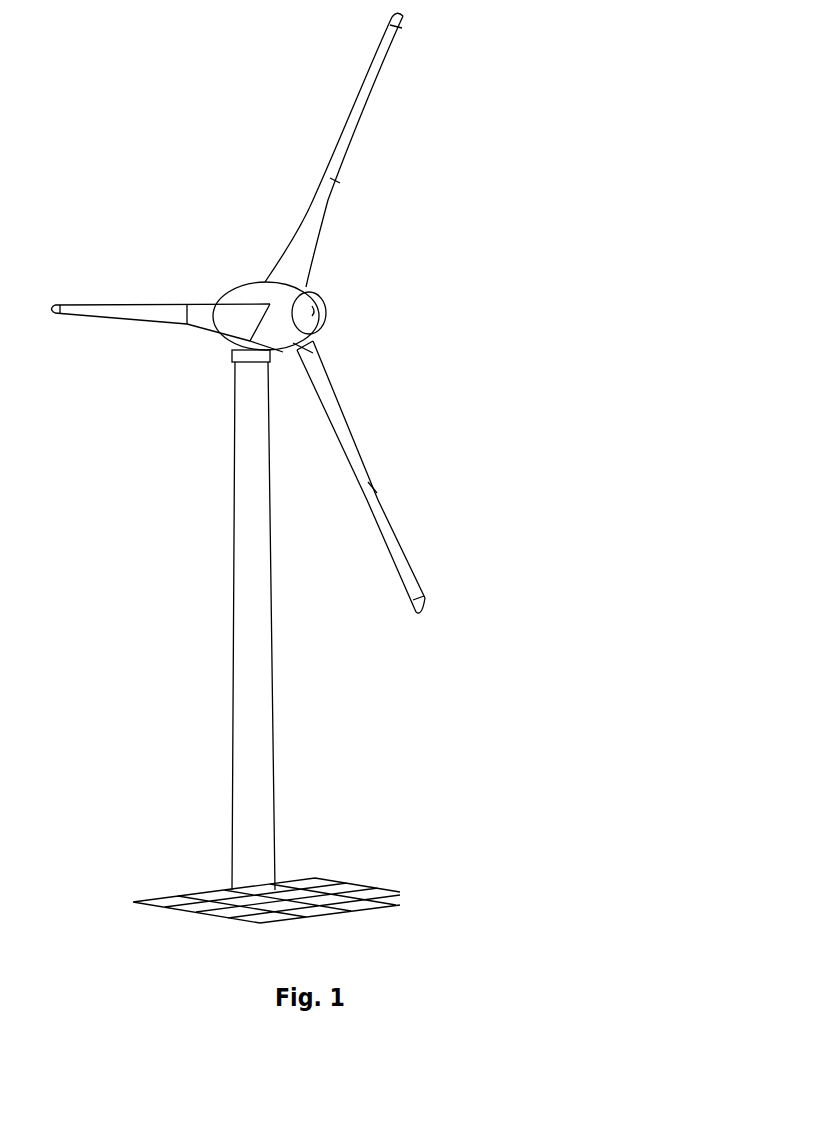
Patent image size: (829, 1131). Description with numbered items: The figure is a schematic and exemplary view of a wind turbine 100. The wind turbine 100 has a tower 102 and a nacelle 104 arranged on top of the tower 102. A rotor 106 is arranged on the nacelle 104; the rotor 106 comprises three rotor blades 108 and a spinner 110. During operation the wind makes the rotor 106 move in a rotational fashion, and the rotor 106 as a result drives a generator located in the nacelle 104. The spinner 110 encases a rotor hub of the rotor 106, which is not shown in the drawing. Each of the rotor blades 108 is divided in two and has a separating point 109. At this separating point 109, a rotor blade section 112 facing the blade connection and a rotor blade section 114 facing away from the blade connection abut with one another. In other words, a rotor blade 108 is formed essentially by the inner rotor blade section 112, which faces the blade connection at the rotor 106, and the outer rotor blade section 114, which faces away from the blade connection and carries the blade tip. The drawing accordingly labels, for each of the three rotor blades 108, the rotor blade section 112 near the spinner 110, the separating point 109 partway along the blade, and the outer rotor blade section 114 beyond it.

The wind turbine 100 is at (195, 410).
The tower 102 is at (258, 704).
The nacelle 104 is at (243, 286).
The rotor 106 is at (428, 218).
The rotor blade 108 is at (307, 128).
The separating point 109 is at (337, 175).
The spinner 110 is at (315, 312).
The rotor blade section facing the blade connection 112 is at (320, 210).
The rotor blade section facing away from the blade connection 114 is at (358, 120).